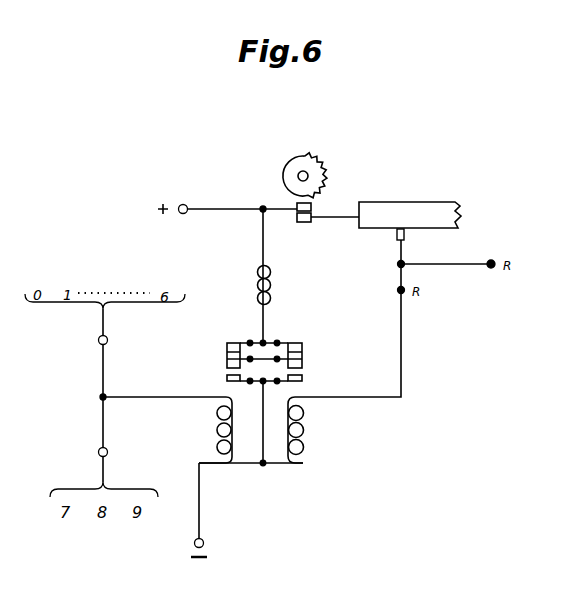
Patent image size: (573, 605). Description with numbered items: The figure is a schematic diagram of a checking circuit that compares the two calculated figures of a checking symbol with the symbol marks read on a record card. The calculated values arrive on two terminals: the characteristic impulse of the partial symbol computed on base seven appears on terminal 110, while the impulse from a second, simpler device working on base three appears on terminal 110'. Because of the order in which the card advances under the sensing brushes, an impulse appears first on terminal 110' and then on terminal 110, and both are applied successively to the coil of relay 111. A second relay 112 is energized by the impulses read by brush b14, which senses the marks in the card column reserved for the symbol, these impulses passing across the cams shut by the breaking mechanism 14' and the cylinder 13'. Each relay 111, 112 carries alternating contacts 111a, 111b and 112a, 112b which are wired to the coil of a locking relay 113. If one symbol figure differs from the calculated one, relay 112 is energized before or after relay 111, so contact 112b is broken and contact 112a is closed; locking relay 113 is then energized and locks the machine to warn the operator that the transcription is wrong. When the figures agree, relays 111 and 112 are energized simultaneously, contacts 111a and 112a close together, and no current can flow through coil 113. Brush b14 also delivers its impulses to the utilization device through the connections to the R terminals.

The breaking mechanism 14' is at (316, 180).
The cylinder 13' is at (410, 203).
The brush b14 is at (417, 242).
The locking relay 113 is at (281, 287).
The alternating contact of relay 111 111b is at (227, 351).
The alternating contact of relay 112 112b is at (302, 351).
The alternating contact of relay 111 111a is at (227, 378).
The alternating contact of relay 112 112a is at (302, 378).
The relay 111 is at (167, 430).
The relay 112 is at (315, 430).
The terminal 110 is at (85, 342).
The terminal 110' is at (85, 456).